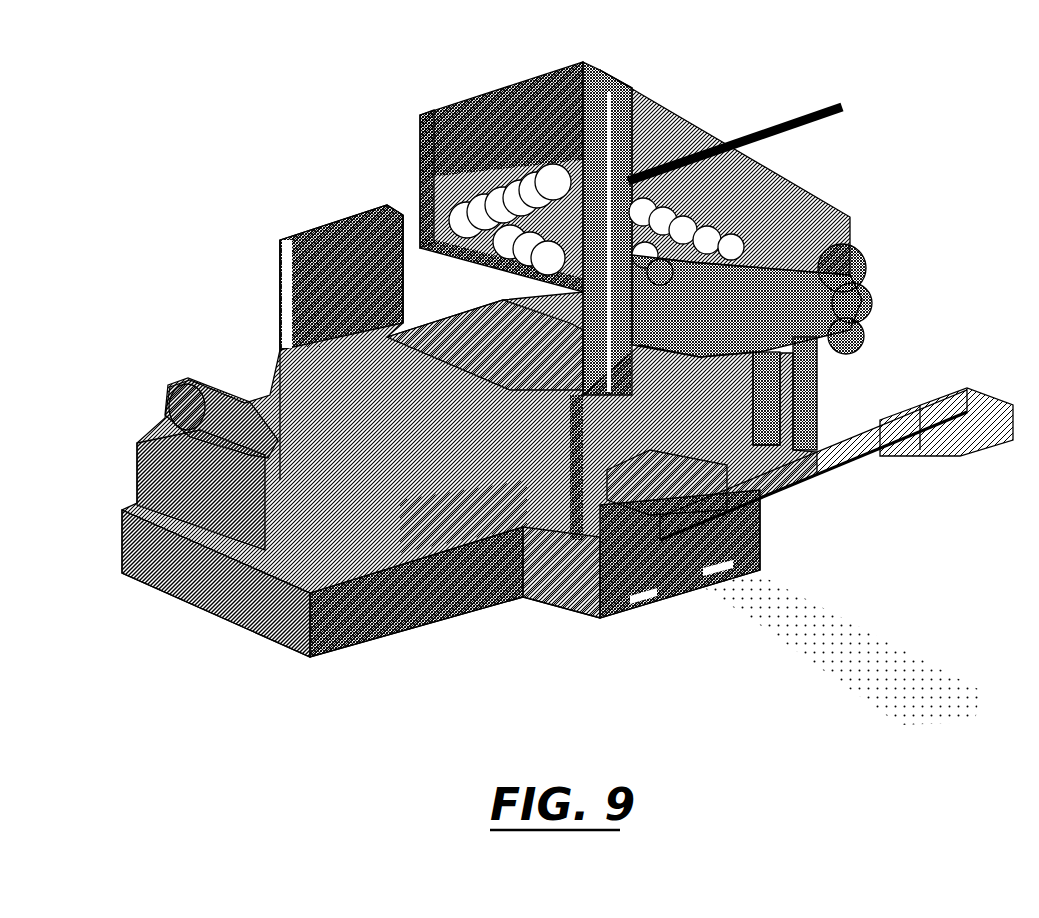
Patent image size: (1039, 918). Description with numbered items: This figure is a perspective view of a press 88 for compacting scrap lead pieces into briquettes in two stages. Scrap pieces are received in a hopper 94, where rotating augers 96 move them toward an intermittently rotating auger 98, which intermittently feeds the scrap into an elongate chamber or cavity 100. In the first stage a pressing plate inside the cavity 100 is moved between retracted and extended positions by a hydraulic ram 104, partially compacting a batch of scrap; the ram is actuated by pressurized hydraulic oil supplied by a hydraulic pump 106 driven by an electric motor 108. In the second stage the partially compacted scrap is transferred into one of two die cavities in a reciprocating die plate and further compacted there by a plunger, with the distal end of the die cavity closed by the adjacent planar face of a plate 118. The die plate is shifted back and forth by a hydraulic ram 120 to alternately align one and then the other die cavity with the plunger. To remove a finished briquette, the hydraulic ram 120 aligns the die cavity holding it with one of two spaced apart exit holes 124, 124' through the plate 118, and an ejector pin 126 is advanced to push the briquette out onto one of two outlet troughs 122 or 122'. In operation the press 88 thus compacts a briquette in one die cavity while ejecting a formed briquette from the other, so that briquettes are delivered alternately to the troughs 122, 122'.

The press 88 is at (305, 83).
The hopper 94 is at (497, 92).
The rotating augers 96 is at (420, 185).
The intermittently rotating auger 98 is at (815, 180).
The elongate chamber or cavity 100 is at (572, 348).
The hydraulic ram 104 is at (700, 114).
The hydraulic pump 106 is at (245, 480).
The electric motor 108 is at (185, 385).
The plate 118 is at (680, 600).
The hydraulic ram 120 is at (579, 602).
The outlet trough 122 is at (813, 484).
The outlet trough 122' is at (952, 399).
The exit hole 124 is at (696, 533).
The exit hole 124' is at (865, 385).
The ejector pin 126 is at (478, 597).